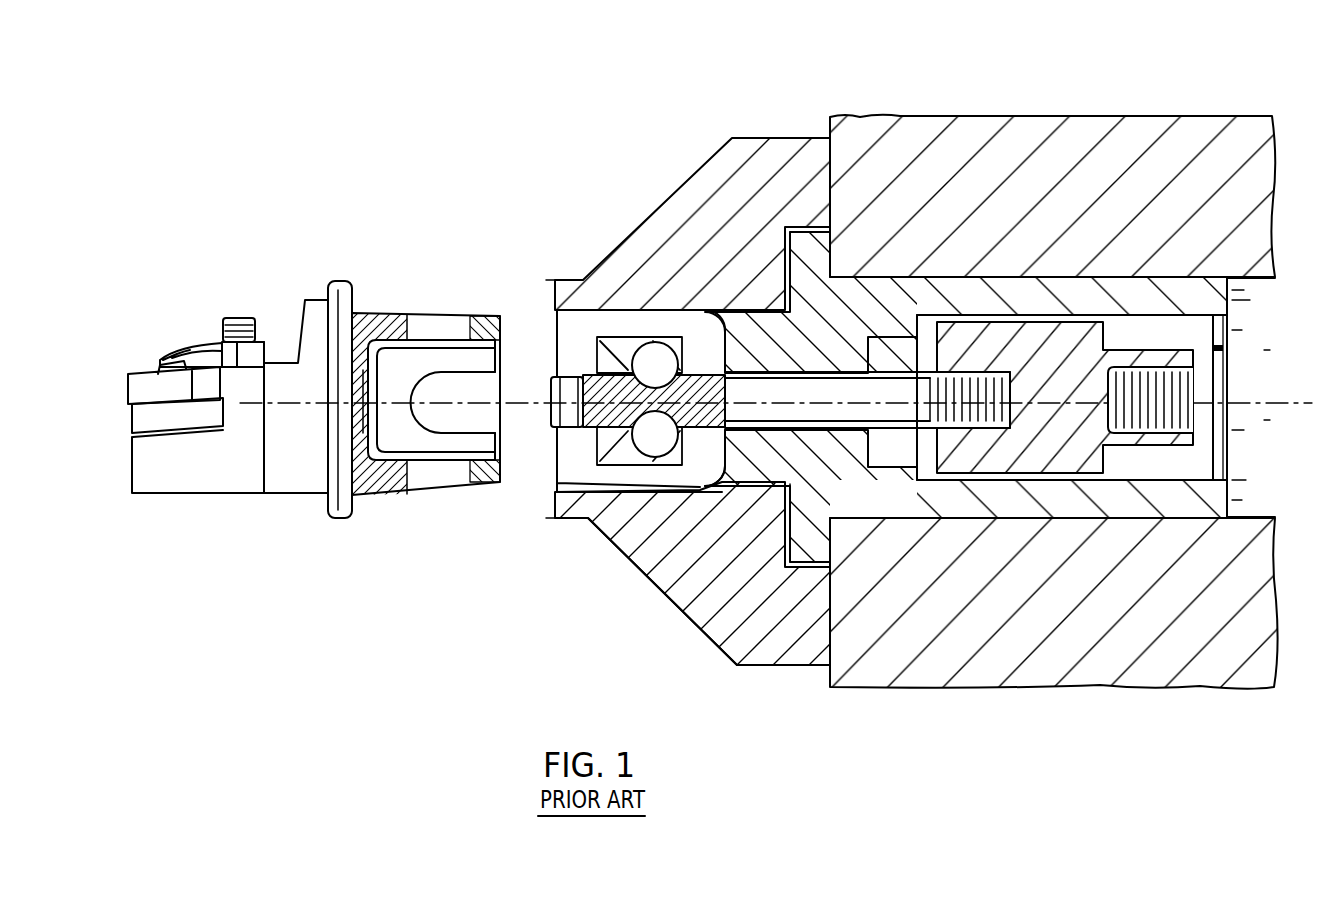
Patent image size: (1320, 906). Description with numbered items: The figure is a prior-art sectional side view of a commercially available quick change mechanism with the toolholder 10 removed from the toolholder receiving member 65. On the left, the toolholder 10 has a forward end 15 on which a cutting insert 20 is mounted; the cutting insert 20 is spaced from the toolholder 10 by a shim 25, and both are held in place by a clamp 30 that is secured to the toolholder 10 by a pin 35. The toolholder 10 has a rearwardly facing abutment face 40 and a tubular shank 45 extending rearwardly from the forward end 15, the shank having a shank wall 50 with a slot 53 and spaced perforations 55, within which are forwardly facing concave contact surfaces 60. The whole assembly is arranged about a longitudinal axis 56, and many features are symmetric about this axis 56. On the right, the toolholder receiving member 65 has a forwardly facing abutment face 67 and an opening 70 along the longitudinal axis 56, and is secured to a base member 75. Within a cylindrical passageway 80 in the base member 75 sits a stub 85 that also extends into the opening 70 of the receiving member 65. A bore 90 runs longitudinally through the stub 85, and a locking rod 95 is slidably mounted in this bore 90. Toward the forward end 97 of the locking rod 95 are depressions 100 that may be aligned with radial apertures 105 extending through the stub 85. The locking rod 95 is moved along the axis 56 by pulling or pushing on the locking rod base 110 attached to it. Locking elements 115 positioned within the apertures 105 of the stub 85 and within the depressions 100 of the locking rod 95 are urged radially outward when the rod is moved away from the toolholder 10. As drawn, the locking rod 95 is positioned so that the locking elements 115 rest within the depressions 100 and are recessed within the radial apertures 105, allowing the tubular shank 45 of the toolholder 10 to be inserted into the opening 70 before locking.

The toolholder 10 is at (279, 306).
The forward end 15 is at (155, 468).
The cutting insert 20 is at (150, 382).
The shim 25 is at (143, 413).
The clamp 30 is at (190, 347).
The pin 35 is at (232, 318).
The rearwardly facing abutment face 40 is at (342, 282).
The tubular shank 45 is at (478, 315).
The shank wall 50 is at (497, 315).
The slot 53 is at (498, 375).
The perforations 55 is at (408, 312).
The longitudinal axis 56 is at (442, 393).
The concave contact surfaces 60 is at (443, 315).
The toolholder receiving member 65 is at (697, 185).
The forwardly facing abutment face 67 is at (556, 508).
The opening 70 is at (556, 366).
The base member 75 is at (1150, 132).
The cylindrical passageway 80 is at (1268, 344).
The stub 85 is at (773, 458).
The bore 90 is at (620, 552).
The locking rod 95 is at (693, 617).
The forward end of the locking rod 97 is at (548, 412).
The depressions 100 is at (703, 367).
The radial apertures 105 is at (670, 352).
The locking rod base 110 is at (1088, 332).
The locking elements 115 is at (648, 348).